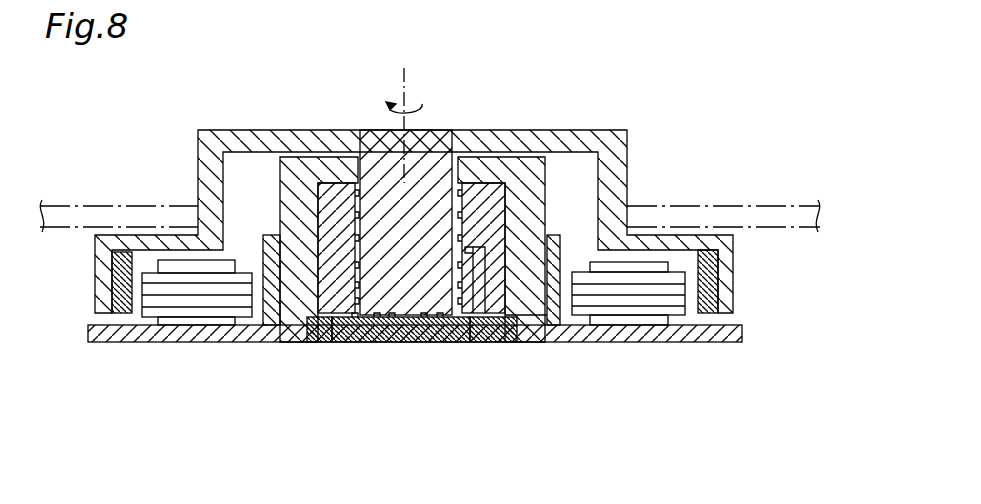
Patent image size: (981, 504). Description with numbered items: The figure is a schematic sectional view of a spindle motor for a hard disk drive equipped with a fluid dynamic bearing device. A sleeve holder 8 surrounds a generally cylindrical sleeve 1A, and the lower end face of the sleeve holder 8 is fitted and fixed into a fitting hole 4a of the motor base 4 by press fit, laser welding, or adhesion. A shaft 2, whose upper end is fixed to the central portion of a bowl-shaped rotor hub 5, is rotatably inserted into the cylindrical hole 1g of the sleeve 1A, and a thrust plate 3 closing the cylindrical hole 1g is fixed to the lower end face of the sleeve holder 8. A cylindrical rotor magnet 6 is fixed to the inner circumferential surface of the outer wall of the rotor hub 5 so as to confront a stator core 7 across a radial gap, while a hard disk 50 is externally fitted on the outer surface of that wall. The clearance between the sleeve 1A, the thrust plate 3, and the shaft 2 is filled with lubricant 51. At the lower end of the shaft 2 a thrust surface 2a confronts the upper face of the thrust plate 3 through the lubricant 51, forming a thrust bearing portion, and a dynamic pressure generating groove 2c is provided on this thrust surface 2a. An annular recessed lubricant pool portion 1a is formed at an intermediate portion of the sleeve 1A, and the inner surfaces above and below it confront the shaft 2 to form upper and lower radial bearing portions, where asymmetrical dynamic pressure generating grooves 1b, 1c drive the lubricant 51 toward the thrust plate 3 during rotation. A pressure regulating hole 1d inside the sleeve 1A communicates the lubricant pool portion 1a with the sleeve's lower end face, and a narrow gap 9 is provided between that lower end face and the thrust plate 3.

The sleeve 1A is at (448, 230).
The lubricant pool portion 1a is at (313, 210).
The dynamic pressure generating groove 1b is at (333, 228).
The dynamic pressure generating groove 1c is at (277, 237).
The pressure regulating hole 1d is at (481, 314).
The cylindrical hole 1g is at (465, 200).
The shaft 2 is at (440, 145).
The thrust surface 2a is at (378, 325).
The dynamic pressure generating groove 2c is at (423, 312).
The thrust plate 3 is at (330, 335).
The base 4 is at (243, 330).
The fitting hole 4a is at (557, 315).
The rotor hub 5 is at (600, 140).
The rotor magnet 6 is at (125, 318).
The stator core 7 is at (185, 312).
The sleeve holder 8 is at (515, 310).
The narrow gap 9 is at (472, 330).
The hard disk 50 is at (731, 201).
The lubricant 51 is at (472, 250).